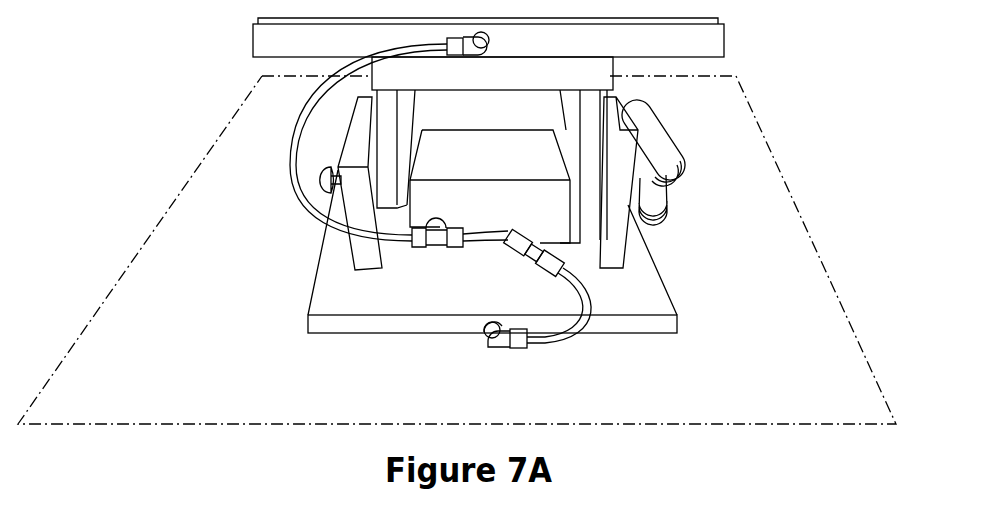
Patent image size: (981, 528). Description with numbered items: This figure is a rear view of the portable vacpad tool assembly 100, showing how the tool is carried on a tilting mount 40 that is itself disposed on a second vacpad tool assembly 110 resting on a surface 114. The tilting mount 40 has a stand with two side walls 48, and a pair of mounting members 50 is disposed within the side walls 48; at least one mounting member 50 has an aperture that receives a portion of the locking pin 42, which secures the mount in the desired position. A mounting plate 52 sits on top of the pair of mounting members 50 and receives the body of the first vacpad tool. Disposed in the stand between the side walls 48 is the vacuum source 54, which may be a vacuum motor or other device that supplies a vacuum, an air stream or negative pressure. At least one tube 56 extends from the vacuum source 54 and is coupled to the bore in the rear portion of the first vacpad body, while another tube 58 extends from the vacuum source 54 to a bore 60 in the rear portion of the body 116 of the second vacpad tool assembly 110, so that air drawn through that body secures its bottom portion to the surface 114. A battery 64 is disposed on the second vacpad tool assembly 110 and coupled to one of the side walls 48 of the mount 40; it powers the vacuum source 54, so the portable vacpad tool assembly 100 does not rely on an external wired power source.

The portable vacpad tool assembly 100 is at (790, 137).
The surface 114 is at (815, 323).
The mounting plate 52 is at (726, 37).
The mounting members 50 is at (415, 112).
The side walls 48 is at (358, 117).
The vacuum source 54 is at (555, 230).
The locking pin 42 is at (317, 173).
The battery 64 is at (680, 157).
The tilting mount 40 is at (682, 233).
The second vacpad tool assembly 110 is at (657, 300).
The top portion of the body 116 is at (333, 300).
The tube 56 is at (298, 192).
The another tube 58 is at (563, 335).
The bore 60 is at (473, 325).